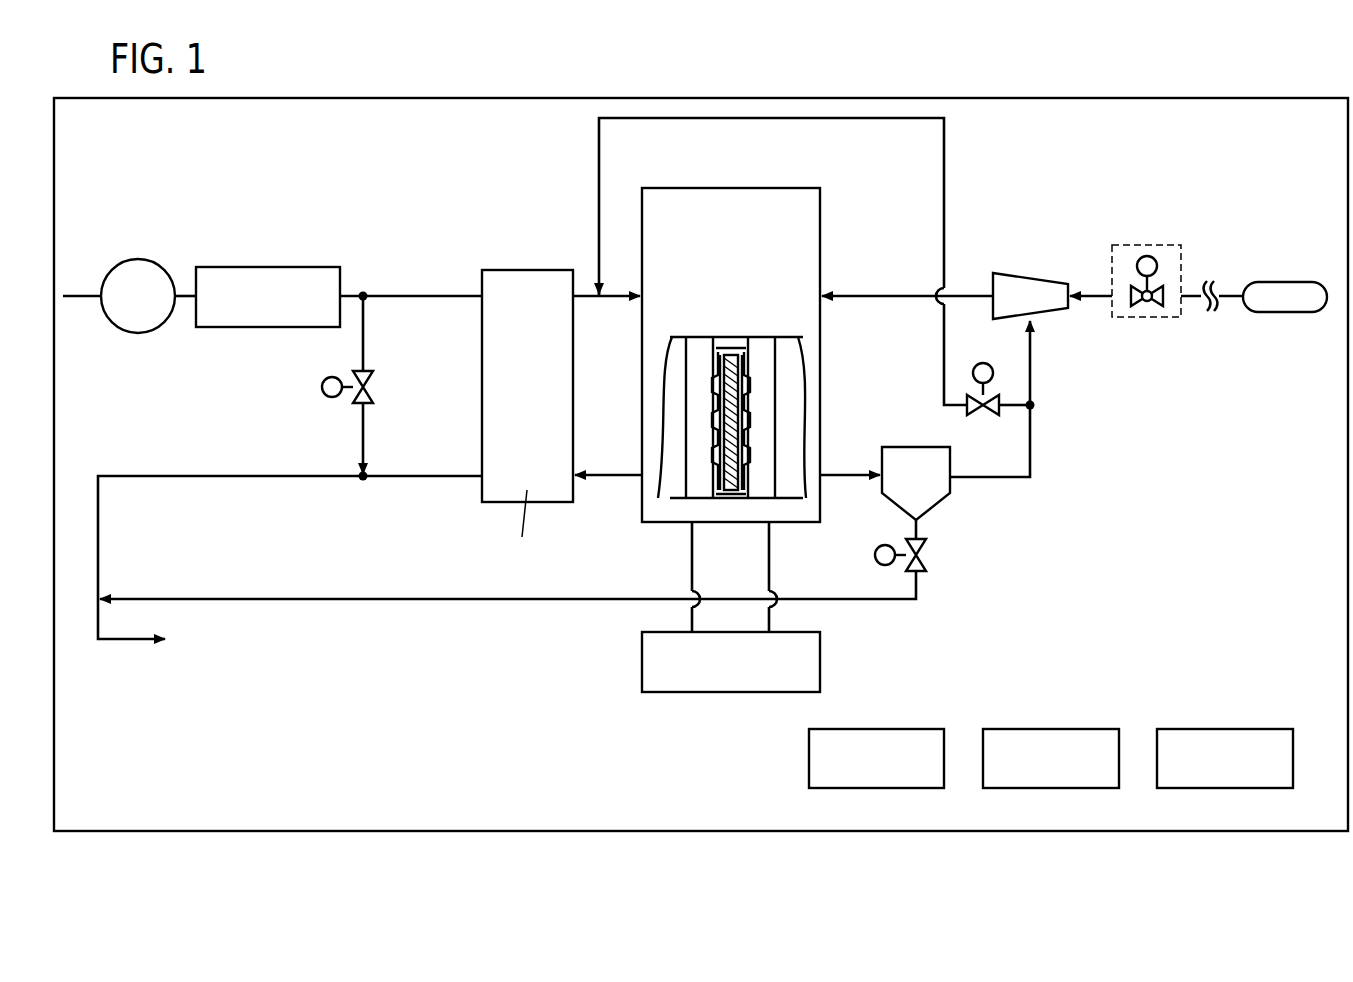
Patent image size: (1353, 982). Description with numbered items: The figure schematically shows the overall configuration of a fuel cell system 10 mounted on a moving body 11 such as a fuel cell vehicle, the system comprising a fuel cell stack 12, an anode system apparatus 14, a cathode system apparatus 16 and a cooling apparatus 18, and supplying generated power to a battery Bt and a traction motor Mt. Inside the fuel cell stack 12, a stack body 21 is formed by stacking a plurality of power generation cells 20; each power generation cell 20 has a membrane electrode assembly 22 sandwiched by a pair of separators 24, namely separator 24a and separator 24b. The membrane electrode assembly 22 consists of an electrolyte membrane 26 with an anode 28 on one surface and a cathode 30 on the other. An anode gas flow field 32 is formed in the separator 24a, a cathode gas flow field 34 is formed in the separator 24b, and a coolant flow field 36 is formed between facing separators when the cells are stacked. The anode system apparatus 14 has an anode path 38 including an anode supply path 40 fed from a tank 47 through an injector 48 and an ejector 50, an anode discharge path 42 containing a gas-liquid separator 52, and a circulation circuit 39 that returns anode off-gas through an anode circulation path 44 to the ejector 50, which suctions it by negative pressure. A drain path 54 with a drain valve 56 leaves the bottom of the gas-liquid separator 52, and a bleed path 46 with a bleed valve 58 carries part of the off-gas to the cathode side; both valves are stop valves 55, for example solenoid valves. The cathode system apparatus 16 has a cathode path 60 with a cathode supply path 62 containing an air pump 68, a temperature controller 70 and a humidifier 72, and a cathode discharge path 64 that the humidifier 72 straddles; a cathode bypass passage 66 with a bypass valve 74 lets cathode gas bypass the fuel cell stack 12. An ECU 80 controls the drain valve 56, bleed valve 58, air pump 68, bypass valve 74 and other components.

The fuel cell system 10 is at (436, 181).
The moving body 11 is at (500, 96).
The fuel cell stack 12 is at (674, 177).
The anode system apparatus 14 is at (1023, 184).
The cathode system apparatus 16 is at (199, 220).
The cooling apparatus 18 is at (617, 670).
The power generation cell 20 is at (750, 411).
The stack body 21 is at (781, 503).
The membrane electrode assembly 22 is at (733, 367).
The separator 24 is at (750, 423).
The separator 24a is at (820, 417).
The separator 24b is at (647, 423).
The electrolyte membrane 26 is at (731, 355).
The anode 28 is at (760, 385).
The cathode 30 is at (718, 356).
The anode gas flow field 32 is at (746, 418).
The cathode gas flow field 34 is at (715, 455).
The coolant flow field 36 is at (746, 438).
The anode path 38 is at (1280, 291).
The circulation circuit 39 is at (893, 292).
The anode supply path 40 is at (850, 299).
The anode discharge path 42 is at (835, 479).
The anode circulation path 44 is at (1032, 449).
The bleed path 46 is at (711, 118).
The tank 47 is at (1287, 313).
The injector 48 is at (1147, 256).
The ejector 50 is at (1017, 274).
The gas-liquid separator 52 is at (909, 447).
The drain path 54 is at (874, 601).
The stop valve 55 is at (931, 453).
The drain valve 56 is at (877, 563).
The bleed valve 58 is at (981, 362).
The cathode path 60 is at (378, 288).
The cathode supply path 62 is at (452, 293).
The cathode discharge path 64 is at (455, 478).
The cathode bypass passage 66 is at (362, 433).
The air pump 68 is at (152, 252).
The temperature controller 70 is at (276, 267).
The humidifier 72 is at (525, 268).
The bypass valve 74 is at (322, 385).
The ECU 80 is at (1228, 728).
The traction motor Mt is at (866, 728).
The battery Bt is at (1052, 728).